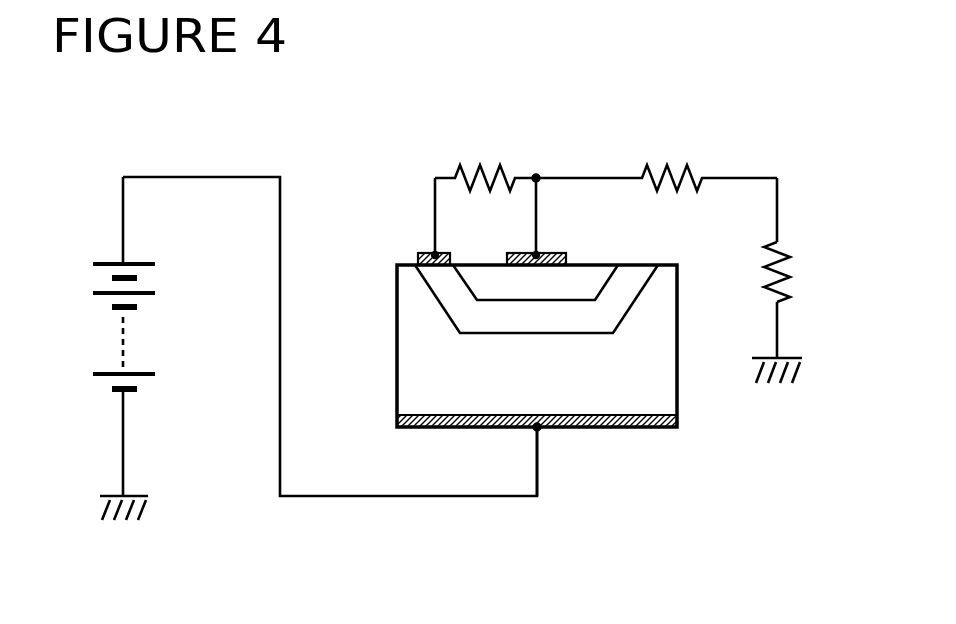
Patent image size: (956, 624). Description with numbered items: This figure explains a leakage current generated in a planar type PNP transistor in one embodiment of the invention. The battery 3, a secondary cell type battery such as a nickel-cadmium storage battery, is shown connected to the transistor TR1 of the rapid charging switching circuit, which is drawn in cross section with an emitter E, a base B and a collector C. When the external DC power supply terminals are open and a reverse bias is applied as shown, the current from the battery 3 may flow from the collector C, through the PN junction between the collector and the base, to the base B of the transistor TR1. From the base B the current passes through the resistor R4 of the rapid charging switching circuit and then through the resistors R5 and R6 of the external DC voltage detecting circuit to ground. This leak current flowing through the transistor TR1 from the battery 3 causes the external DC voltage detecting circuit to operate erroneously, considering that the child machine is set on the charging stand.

The battery 3 is at (108, 296).
The transistor TR1 is at (499, 356).
The resistor R4 is at (485, 162).
The resistor R5 is at (656, 162).
The resistor R6 is at (794, 272).
The base B is at (431, 241).
The emitter E is at (536, 241).
The collector C is at (550, 461).